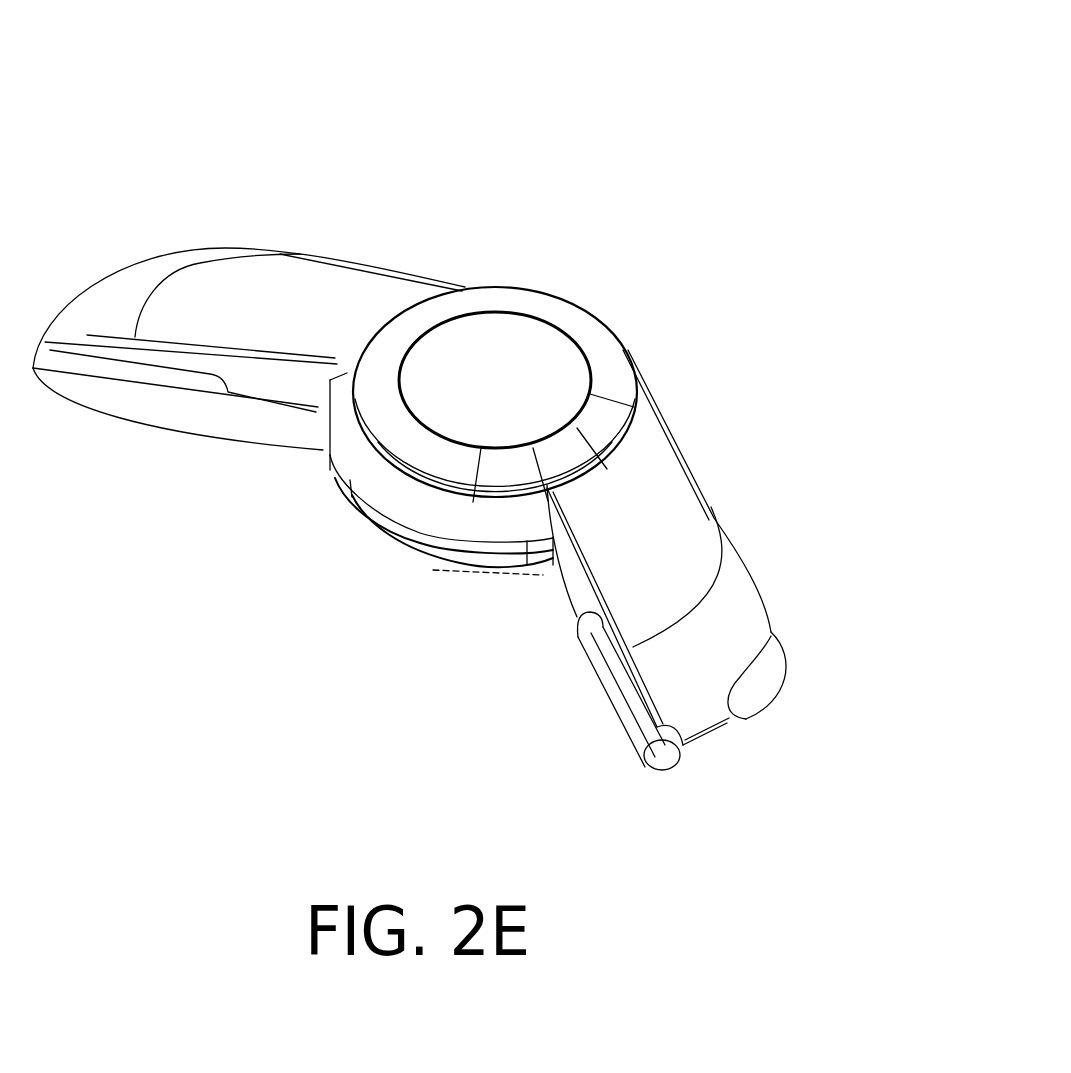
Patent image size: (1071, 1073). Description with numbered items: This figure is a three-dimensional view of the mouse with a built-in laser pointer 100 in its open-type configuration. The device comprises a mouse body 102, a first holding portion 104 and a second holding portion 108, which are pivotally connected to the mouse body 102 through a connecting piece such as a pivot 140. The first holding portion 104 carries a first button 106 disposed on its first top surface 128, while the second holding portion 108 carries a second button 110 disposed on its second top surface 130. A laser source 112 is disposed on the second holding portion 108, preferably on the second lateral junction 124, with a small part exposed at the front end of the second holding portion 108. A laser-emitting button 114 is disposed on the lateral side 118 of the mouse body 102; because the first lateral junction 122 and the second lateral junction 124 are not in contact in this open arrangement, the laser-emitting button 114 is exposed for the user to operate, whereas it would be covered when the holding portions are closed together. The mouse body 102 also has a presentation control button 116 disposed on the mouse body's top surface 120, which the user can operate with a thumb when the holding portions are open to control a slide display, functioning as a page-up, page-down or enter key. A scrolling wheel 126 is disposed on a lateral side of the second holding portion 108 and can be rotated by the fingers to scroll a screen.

The mouse with a built-in laser pointer 100 is at (820, 60).
The mouse body 102 is at (593, 277).
The first holding portion 104 is at (64, 258).
The first button 106 is at (317, 283).
The second holding portion 108 is at (710, 783).
The second button 110 is at (663, 478).
The laser source 112 is at (663, 757).
The laser-emitting button 114 is at (447, 547).
The presentation control button 116 is at (600, 420).
The lateral side 118 is at (297, 513).
The mouse body's top surface 120 is at (498, 337).
The first lateral junction 122 is at (237, 418).
The second lateral junction 124 is at (567, 593).
The scrolling wheel 126 is at (760, 687).
The first top surface 128 is at (153, 267).
The second top surface 130 is at (740, 593).
The pivot 140 is at (413, 500).